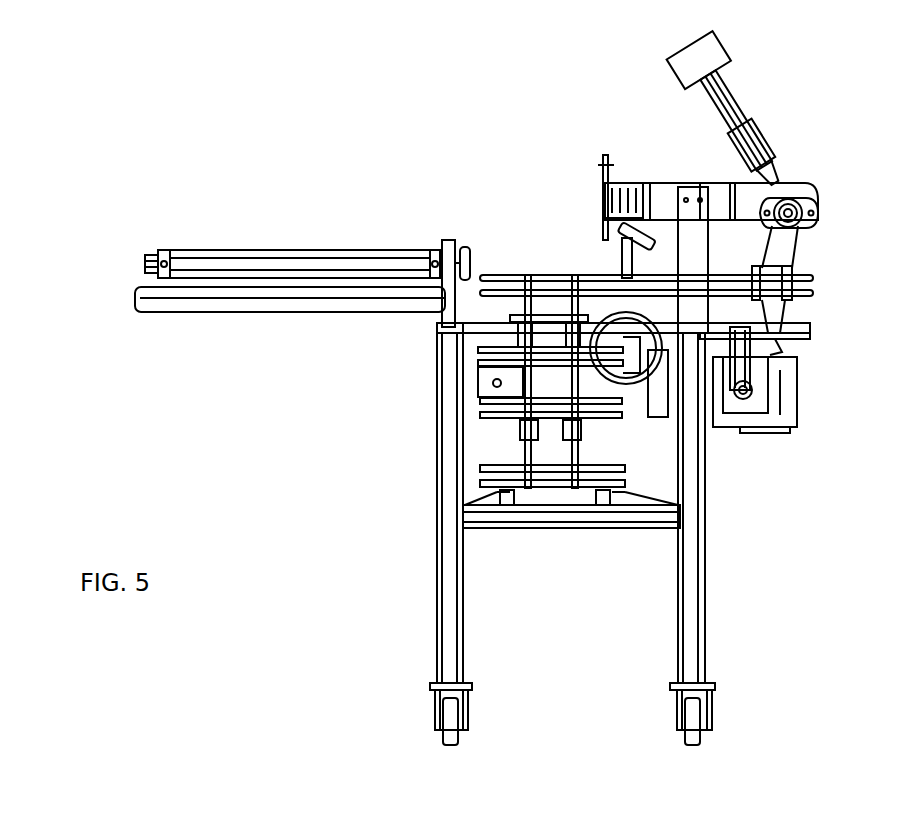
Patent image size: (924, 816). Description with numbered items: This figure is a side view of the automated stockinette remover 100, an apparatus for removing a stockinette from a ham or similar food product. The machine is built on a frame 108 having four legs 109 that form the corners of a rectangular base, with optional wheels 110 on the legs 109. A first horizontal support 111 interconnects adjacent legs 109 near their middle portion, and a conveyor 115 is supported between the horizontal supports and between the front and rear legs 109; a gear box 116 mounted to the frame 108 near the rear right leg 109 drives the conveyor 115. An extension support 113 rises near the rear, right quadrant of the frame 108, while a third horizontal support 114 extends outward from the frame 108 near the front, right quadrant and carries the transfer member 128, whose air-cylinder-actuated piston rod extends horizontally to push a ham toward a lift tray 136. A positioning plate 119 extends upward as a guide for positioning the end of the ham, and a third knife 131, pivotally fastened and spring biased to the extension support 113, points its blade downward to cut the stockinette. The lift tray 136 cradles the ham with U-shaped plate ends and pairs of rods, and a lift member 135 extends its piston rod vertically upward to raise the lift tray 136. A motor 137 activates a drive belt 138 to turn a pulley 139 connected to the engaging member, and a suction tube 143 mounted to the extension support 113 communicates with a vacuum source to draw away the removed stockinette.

The stockinette remover 100 is at (497, 190).
The frame 108 is at (413, 576).
The legs 109 is at (440, 633).
The wheels 110 is at (450, 738).
The first horizontal support 111 is at (623, 515).
The extension support 113 is at (694, 222).
The third horizontal support 114 is at (200, 297).
The conveyor 115 is at (553, 426).
The gear box 116 is at (632, 400).
The positioning plate 119 is at (604, 196).
The transfer member 128 is at (240, 258).
The third knife 131 is at (632, 232).
The lift member 135 is at (738, 380).
The lift tray 136 is at (822, 284).
The motor 137 is at (788, 398).
The drive belt 138 is at (776, 342).
The pulley 139 is at (802, 206).
The suction tube 143 is at (755, 150).